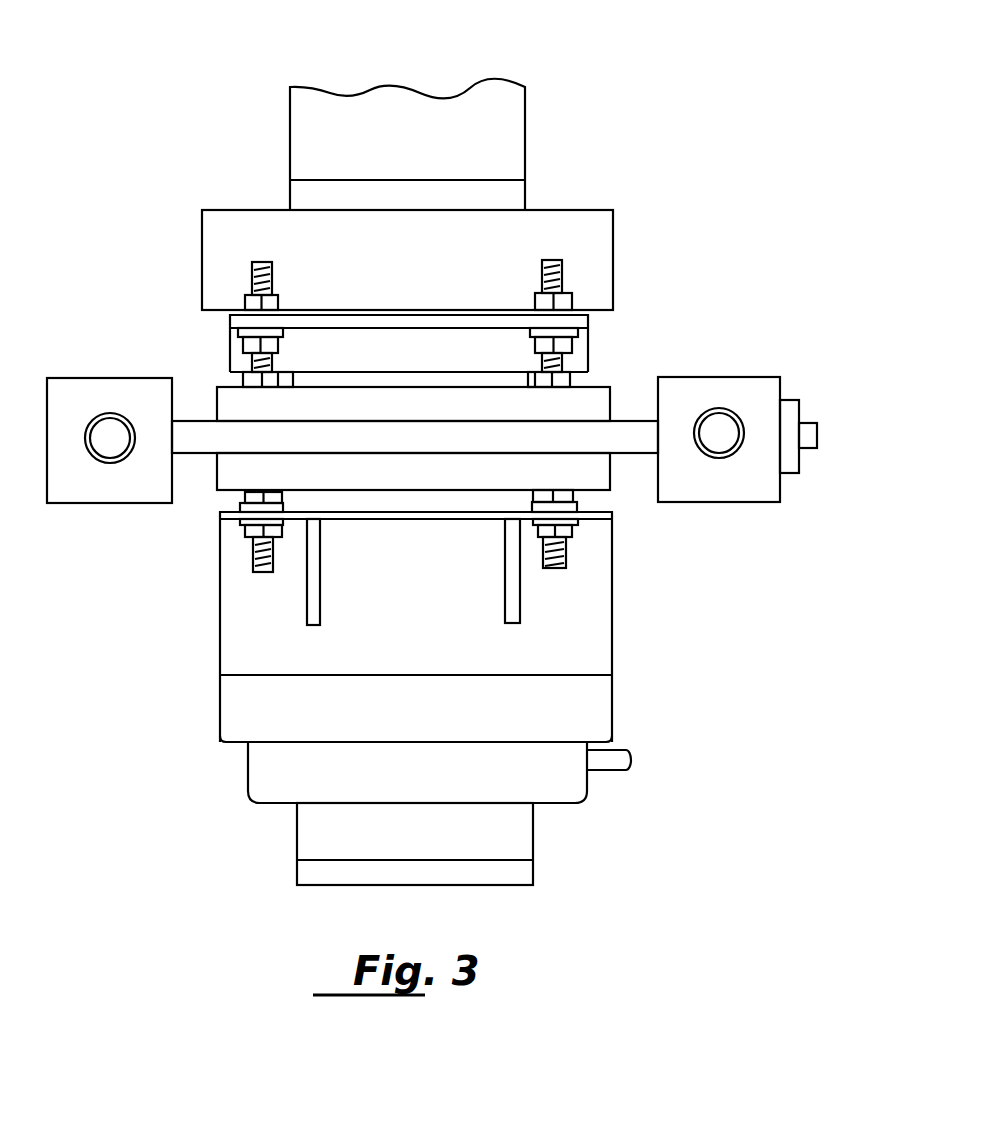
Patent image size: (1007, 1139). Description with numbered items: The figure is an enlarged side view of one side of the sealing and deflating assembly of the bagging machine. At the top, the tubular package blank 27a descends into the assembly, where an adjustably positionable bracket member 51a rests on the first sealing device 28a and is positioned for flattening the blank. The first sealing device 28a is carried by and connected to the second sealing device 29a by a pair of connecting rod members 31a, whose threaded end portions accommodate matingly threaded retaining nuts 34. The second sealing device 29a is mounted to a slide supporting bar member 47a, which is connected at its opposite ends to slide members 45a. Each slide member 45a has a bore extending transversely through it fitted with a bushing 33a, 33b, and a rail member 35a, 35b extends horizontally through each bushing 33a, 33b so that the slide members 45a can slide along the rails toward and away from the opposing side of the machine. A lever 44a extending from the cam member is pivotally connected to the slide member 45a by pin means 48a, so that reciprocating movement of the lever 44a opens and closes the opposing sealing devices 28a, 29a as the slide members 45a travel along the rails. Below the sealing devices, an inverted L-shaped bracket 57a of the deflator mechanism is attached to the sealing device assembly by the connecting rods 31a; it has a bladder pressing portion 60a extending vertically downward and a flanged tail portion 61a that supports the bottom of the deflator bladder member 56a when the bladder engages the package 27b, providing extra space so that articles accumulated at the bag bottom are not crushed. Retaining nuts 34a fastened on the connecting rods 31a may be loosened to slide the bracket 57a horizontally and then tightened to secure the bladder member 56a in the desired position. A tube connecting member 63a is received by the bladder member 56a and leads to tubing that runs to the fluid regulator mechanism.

The package blank 27a is at (440, 115).
The bracket member 51a is at (568, 210).
The first sealing device 28a is at (237, 322).
The connecting rod member 31a is at (255, 266).
The nut 34 is at (570, 340).
The second sealing device 29a is at (608, 386).
The slide supporting bar member 47a is at (202, 445).
The slide member 45a is at (95, 395).
The bushing 33b is at (130, 458).
The rail member 35b is at (110, 440).
The bushing 33a is at (708, 457).
The rail member 35a is at (725, 438).
The lever 44a is at (790, 403).
The pin means 48a is at (820, 431).
The bracket 57a is at (620, 644).
The bladder pressing portion 60a is at (262, 653).
The flanged tail portion 61a is at (262, 720).
The retaining nut 34a is at (248, 535).
The deflator bladder member 56a is at (553, 778).
The tube connecting member 63a is at (615, 760).
The package 27b is at (328, 845).